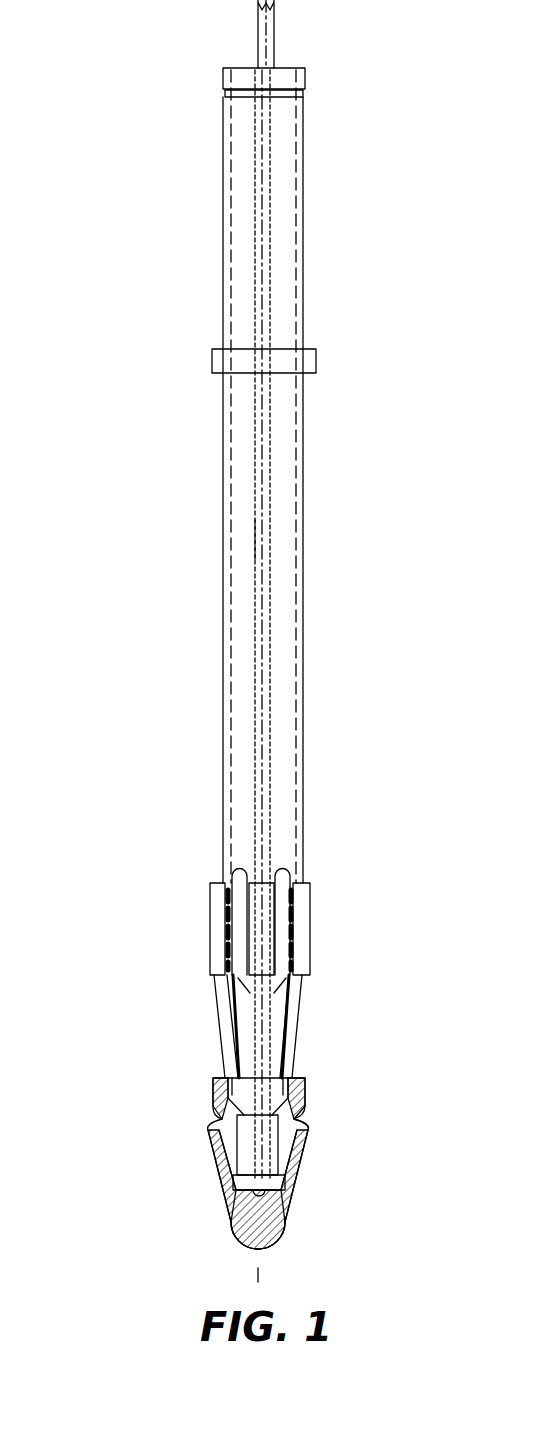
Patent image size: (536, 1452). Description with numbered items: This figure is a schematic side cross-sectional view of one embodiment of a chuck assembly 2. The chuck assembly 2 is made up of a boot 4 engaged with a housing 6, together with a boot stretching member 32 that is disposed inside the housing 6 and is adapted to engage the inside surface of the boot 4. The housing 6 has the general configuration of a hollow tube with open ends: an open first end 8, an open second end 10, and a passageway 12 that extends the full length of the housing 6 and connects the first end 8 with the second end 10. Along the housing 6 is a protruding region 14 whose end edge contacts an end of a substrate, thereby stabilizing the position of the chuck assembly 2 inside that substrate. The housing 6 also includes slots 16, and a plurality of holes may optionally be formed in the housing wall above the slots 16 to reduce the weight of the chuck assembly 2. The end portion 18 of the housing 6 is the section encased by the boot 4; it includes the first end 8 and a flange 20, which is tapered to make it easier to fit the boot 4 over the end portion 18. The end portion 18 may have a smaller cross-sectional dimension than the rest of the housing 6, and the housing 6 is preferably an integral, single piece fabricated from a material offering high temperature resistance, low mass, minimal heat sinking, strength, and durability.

The chuck assembly 2 is at (106, 590).
The boot 4 is at (222, 1222).
The housing 6 is at (303, 577).
The first end 8 is at (277, 1200).
The second end 10 is at (287, 68).
The passageway 12 is at (293, 1065).
The protruding region 14 is at (311, 940).
The slots 16 is at (281, 868).
The end portion 18 is at (246, 1138).
The flange 20 is at (306, 1112).
The boot stretching member 32 is at (250, 538).